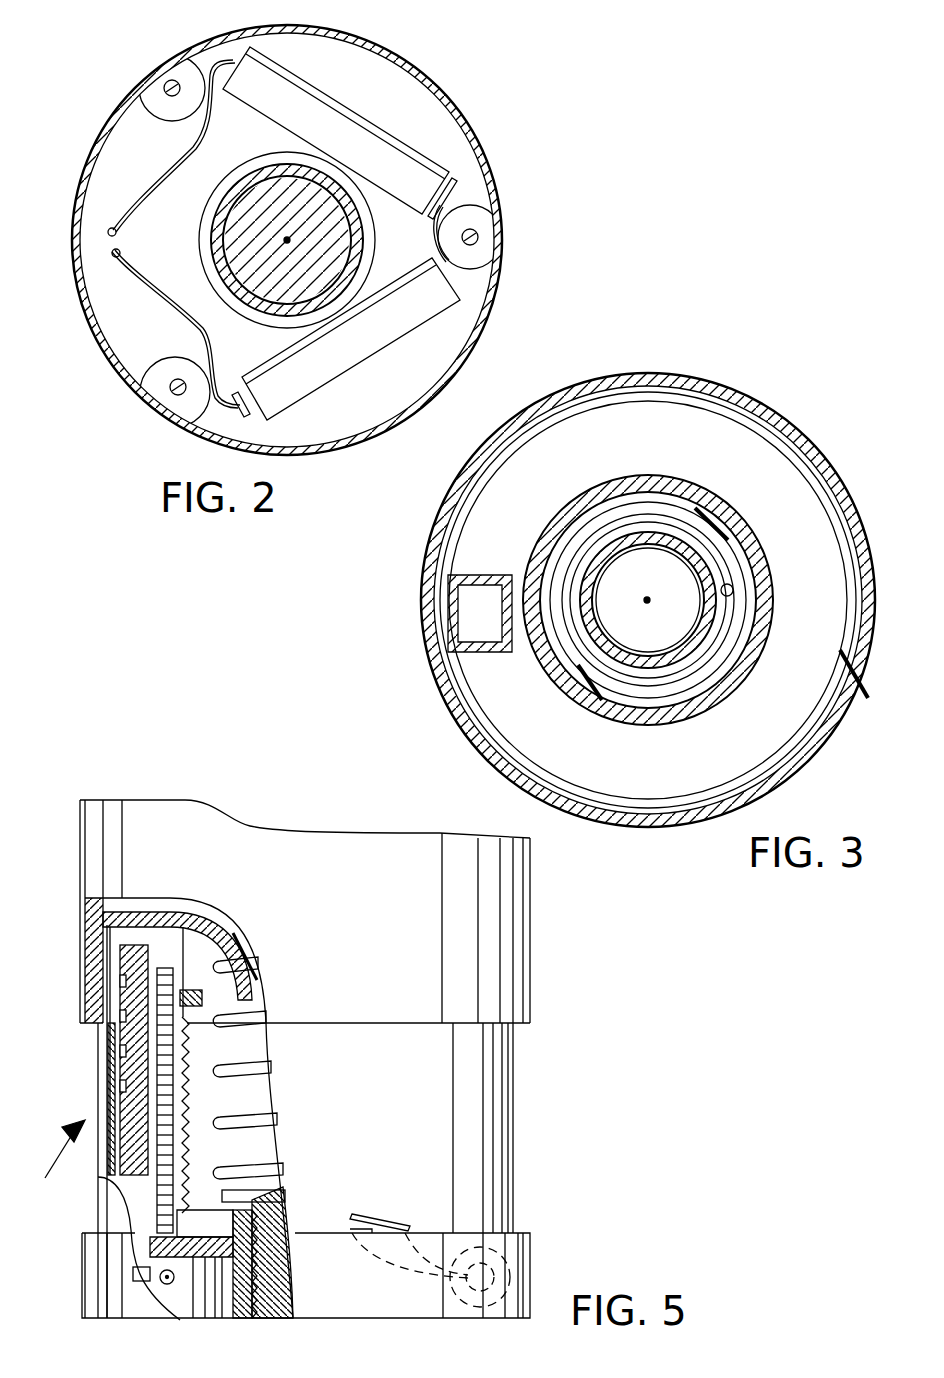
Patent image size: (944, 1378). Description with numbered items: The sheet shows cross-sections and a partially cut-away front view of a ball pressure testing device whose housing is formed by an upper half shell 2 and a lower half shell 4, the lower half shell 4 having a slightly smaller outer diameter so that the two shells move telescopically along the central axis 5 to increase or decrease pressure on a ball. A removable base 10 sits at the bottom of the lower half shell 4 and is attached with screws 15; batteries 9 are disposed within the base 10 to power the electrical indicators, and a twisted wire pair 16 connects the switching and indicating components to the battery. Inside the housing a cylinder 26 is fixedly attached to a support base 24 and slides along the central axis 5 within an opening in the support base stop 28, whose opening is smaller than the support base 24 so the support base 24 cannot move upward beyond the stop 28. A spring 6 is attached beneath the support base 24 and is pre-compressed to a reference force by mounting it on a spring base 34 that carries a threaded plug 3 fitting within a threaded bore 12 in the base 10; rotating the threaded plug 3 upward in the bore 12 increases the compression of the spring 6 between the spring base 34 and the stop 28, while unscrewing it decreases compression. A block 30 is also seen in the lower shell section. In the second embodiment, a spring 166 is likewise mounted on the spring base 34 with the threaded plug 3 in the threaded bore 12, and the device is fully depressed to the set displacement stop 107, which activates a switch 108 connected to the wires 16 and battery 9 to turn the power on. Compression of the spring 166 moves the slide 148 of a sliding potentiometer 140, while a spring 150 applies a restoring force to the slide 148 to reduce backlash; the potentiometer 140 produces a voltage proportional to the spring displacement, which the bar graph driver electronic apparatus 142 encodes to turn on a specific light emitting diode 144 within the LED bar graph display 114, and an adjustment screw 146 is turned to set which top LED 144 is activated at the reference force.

In FIG. 3, the upper half shell 2 is at (438, 509).
In FIG. 5, the upper half shell 2 is at (508, 913).
In FIG. 2, the threaded plug 3 is at (250, 212).
In FIG. 5, the threaded plug 3 is at (270, 1290).
In FIG. 3, the lower half shell 4 is at (445, 548).
In FIG. 5, the lower half shell 4 is at (487, 1070).
In FIG. 2, the central axis 5 is at (287, 240).
In FIG. 3, the central axis 5 is at (647, 603).
In FIG. 3, the spring 6 is at (653, 518).
In FIG. 2, the batteries 9 is at (420, 155).
In FIG. 5, the batteries 9 is at (460, 1302).
In FIG. 2, the removable base 10 is at (432, 86).
In FIG. 5, the removable base 10 is at (522, 1258).
In FIG. 2, the threaded bore 12 is at (277, 170).
In FIG. 5, the threaded bore 12 is at (250, 1310).
In FIG. 2, the screws 15 is at (165, 80).
In FIG. 2, the twisted wire pair 16 is at (120, 227).
In FIG. 5, the twisted wire pair 16 is at (403, 1268).
In FIG. 3, the support base 24 is at (605, 493).
In FIG. 5, the support base 24 is at (193, 950).
In FIG. 3, the cylinder 26 is at (730, 623).
In FIG. 5, the cylinder 26 is at (247, 952).
In FIG. 3, the support base stop 28 is at (802, 712).
In FIG. 5, the support base stop 28 is at (155, 918).
In FIG. 3, the switch block 30 is at (492, 655).
In FIG. 2, the spring base 34 is at (260, 317).
In FIG. 5, the set displacement stop 107 is at (517, 1233).
In FIG. 5, the switch 108 is at (360, 1213).
In FIG. 5, the LED bar graph display 114 is at (49, 1165).
In FIG. 5, the sliding potentiometer 140 is at (187, 1120).
In FIG. 5, the bar graph driver electronic apparatus 142 is at (133, 1273).
In FIG. 5, the light emitting diode 144 is at (150, 1048).
In FIG. 5, the adjustment screw 146 is at (190, 1310).
In FIG. 5, the slide 148 is at (202, 1000).
In FIG. 5, the spring 150 is at (247, 1055).
In FIG. 5, the spring 166 is at (247, 1113).